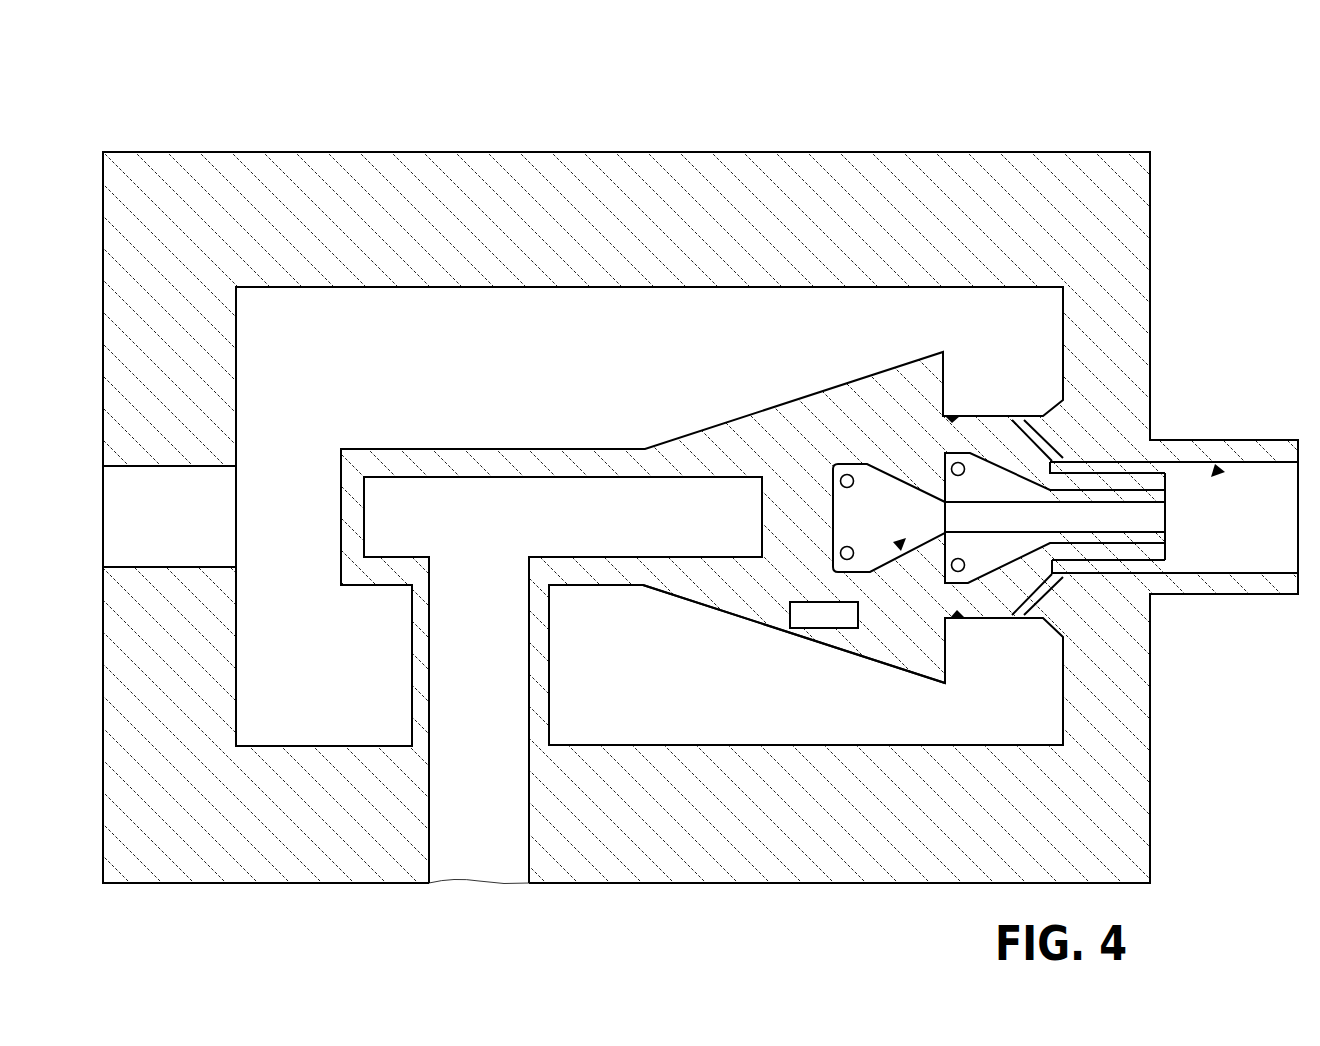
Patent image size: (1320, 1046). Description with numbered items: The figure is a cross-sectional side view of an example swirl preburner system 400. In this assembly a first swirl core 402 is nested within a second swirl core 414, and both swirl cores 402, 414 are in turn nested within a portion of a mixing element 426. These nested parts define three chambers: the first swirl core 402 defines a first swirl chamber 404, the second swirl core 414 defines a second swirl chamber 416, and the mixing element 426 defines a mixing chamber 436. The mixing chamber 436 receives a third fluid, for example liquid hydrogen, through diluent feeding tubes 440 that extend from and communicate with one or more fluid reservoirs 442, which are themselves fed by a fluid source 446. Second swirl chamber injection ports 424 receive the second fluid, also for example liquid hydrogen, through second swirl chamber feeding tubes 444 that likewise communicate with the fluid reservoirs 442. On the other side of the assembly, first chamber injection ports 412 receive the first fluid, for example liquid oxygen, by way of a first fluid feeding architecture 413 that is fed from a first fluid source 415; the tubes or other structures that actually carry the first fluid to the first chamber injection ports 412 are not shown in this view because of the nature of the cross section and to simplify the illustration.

The swirl preburner system 400 is at (1178, 120).
The first swirl core 402 is at (830, 488).
The first swirl chamber 404 is at (897, 548).
The first chamber injection ports 412 is at (848, 474).
The first fluid feeding architecture 413 is at (600, 586).
The second swirl core 414 is at (1000, 583).
The first fluid source 415 is at (412, 776).
The second swirl chamber 416 is at (994, 470).
The second swirl chamber injection ports 424 is at (958, 453).
The mixing element 426 is at (1120, 450).
The mixing chamber 436 is at (1218, 470).
The diluent feeding tubes 440 is at (1067, 594).
The fluid reservoirs 442 is at (810, 287).
The second swirl chamber feeding tubes 444 is at (968, 619).
The fluid source 446 is at (143, 466).